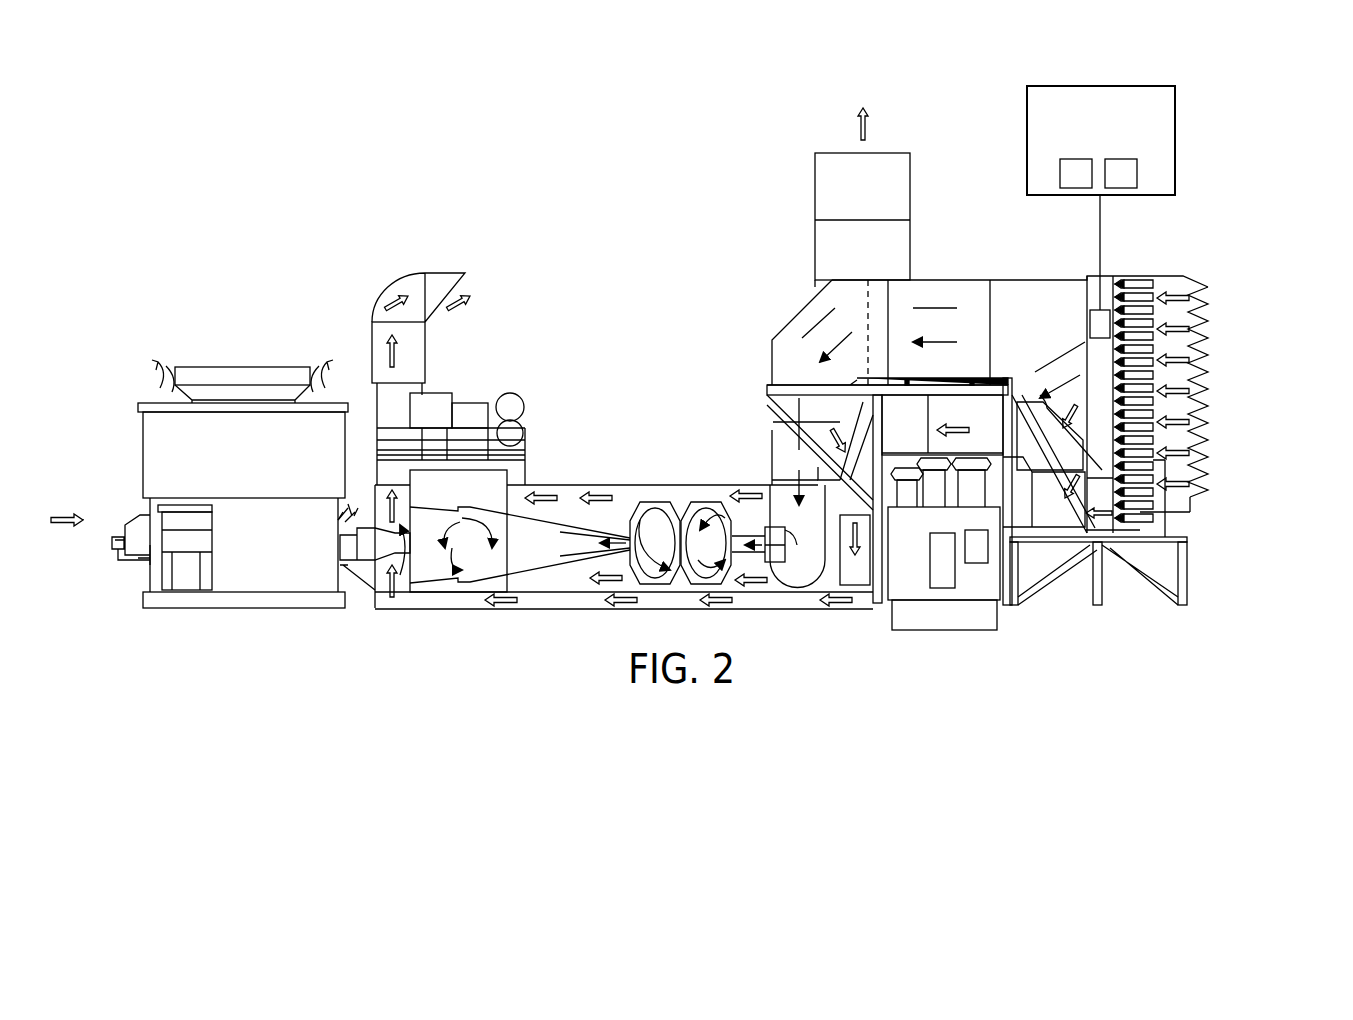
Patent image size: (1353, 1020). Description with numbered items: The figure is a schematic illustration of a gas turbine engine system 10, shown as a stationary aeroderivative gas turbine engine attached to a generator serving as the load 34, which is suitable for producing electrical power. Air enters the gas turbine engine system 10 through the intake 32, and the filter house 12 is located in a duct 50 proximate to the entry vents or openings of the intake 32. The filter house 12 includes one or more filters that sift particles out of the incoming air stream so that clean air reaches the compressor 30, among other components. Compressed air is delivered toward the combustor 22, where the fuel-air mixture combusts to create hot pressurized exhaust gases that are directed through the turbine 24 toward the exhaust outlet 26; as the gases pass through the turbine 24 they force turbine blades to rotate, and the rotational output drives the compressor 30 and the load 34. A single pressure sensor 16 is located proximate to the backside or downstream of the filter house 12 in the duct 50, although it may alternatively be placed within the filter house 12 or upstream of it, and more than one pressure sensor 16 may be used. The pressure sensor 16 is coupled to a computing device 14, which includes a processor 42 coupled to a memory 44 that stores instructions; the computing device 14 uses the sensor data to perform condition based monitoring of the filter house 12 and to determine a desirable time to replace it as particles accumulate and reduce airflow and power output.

The gas turbine engine system 10 is at (543, 253).
The filter house 12 is at (1128, 268).
The computing device 14 is at (1100, 86).
The pressure sensor 16 is at (1088, 325).
The combustor 22 is at (603, 520).
The turbine 24 is at (530, 515).
The exhaust outlet 26 is at (437, 593).
The compressor 30 is at (645, 502).
The air intake 32 is at (1230, 252).
The load 34 is at (242, 608).
The processor 42 is at (1075, 188).
The memory 44 is at (1120, 188).
The duct 50 is at (938, 280).